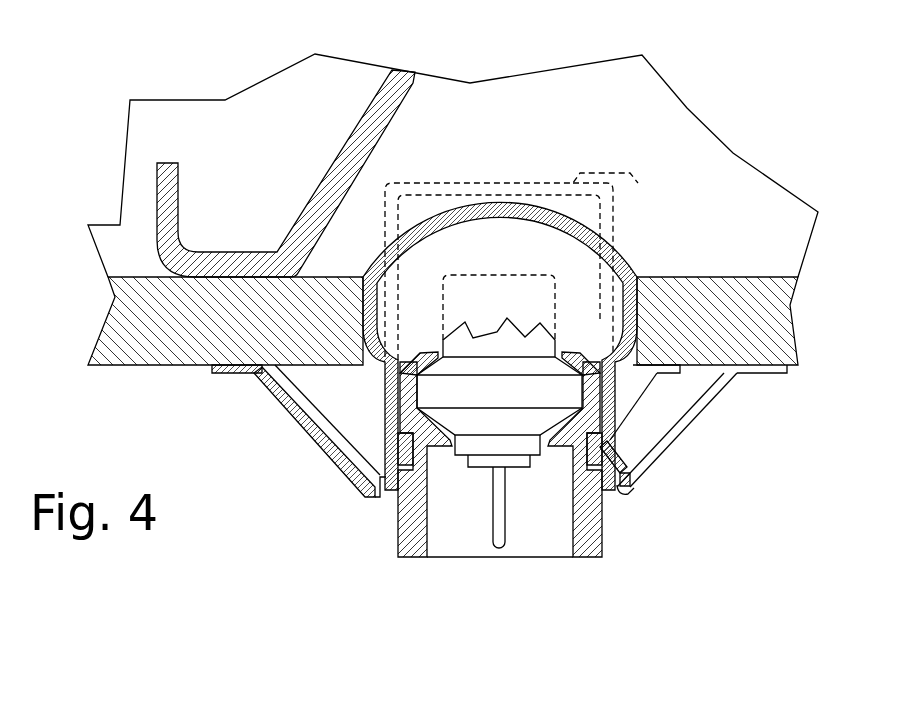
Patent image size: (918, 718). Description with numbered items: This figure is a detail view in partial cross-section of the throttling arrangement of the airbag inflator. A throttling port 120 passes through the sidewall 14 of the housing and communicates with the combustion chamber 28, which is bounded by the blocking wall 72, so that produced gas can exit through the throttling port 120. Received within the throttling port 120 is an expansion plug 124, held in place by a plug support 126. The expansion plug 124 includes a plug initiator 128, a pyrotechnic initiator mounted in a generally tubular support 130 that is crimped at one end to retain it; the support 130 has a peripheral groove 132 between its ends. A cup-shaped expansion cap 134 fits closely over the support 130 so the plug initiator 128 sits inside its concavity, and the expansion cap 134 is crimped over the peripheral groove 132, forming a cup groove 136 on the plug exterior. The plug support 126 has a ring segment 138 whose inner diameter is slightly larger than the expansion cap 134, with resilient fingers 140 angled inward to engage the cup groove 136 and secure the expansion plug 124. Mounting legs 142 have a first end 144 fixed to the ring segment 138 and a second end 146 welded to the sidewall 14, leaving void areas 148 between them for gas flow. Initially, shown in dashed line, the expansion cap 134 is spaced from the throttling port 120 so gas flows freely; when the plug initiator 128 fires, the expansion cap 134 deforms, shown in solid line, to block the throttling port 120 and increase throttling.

The sidewall 14 is at (142, 365).
The combustion chamber 28 is at (252, 162).
The blocking wall 72 is at (372, 153).
The throttling port 120 is at (627, 350).
The expansion plug 124 is at (602, 553).
The plug support 126 is at (733, 387).
The plug initiator 128 is at (520, 395).
The support 130 is at (466, 523).
The peripheral groove 132 is at (427, 460).
The expansion cap 134 is at (617, 257).
The cup groove 136 is at (397, 445).
The ring segment 138 is at (633, 485).
The resilient fingers 140 is at (615, 450).
The mounting legs 142 is at (308, 432).
The first end 144 is at (380, 495).
The second end 146 is at (257, 368).
The void areas 148 is at (363, 418).